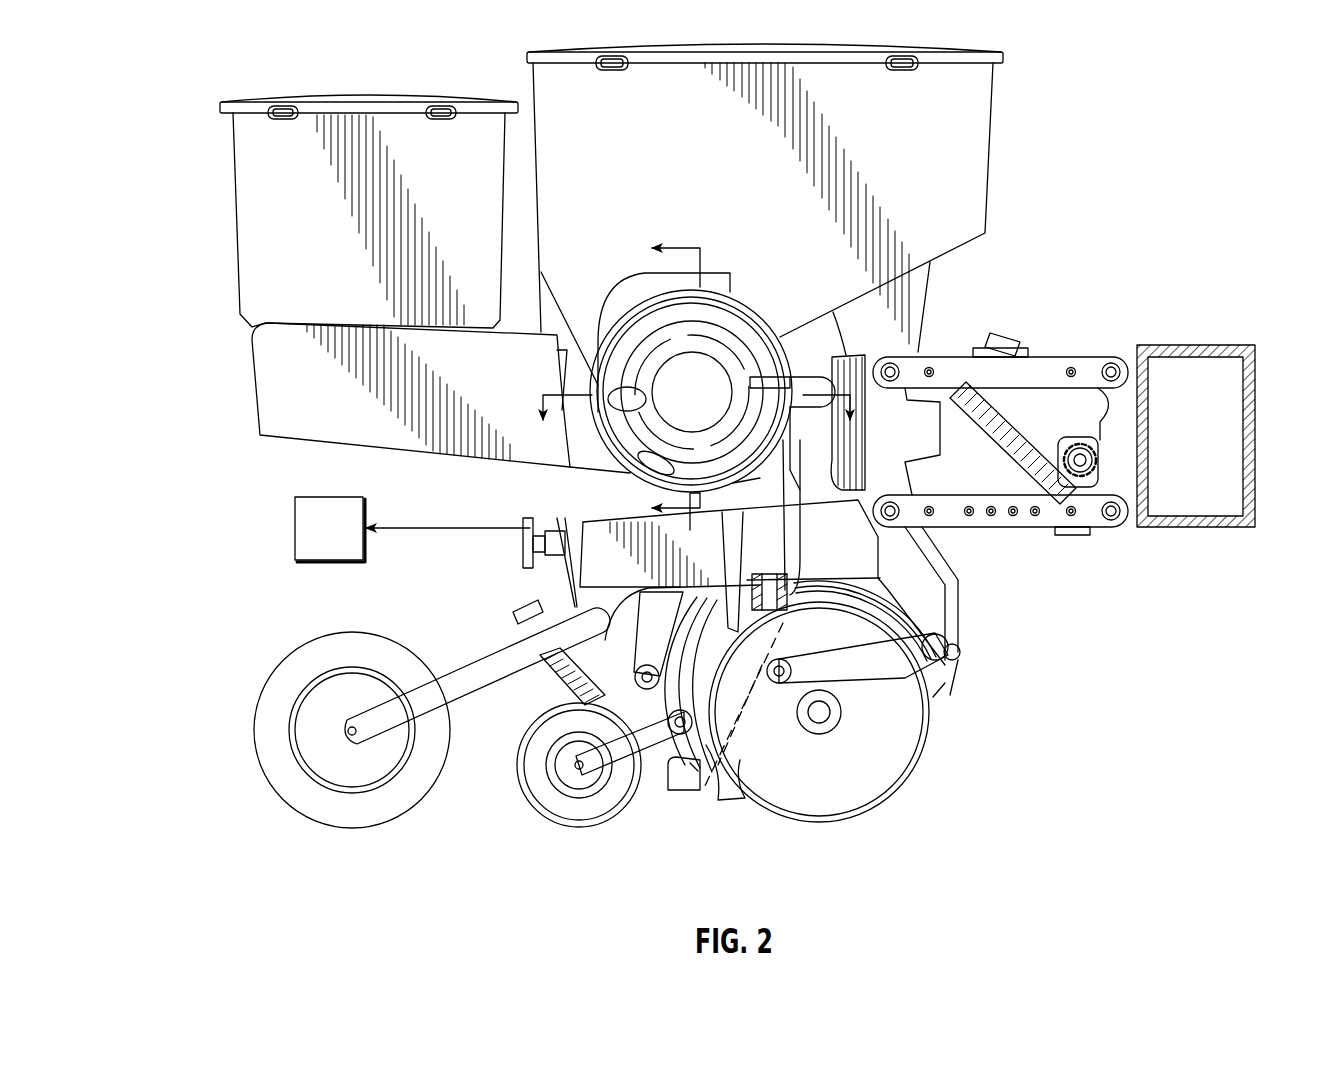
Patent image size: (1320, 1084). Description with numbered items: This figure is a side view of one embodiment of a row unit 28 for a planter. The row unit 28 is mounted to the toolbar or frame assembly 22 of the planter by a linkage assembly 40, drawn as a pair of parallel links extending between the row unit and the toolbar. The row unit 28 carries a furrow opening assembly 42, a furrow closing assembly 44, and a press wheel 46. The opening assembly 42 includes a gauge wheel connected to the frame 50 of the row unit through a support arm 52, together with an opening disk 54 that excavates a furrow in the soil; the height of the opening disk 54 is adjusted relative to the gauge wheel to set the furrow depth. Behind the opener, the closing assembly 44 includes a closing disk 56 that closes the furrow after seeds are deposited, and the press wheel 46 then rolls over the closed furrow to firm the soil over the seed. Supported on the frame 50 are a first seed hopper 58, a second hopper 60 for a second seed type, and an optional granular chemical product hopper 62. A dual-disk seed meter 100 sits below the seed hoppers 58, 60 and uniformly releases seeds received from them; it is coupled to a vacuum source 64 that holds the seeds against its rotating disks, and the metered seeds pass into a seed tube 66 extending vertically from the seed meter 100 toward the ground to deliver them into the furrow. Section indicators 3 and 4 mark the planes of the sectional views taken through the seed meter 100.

The row unit 28 is at (1108, 182).
The toolbar or frame assembly 22 is at (1197, 338).
The granular chemical product hopper 62 is at (447, 207).
The first seed hopper 58 is at (765, 214).
The second hopper 60 is at (675, 168).
The dual-disk seed meter 100 is at (768, 297).
The section line 3 is at (666, 376).
The section line 4 is at (697, 426).
The frame 50 is at (320, 428).
The vacuum source 64 is at (342, 543).
The seed tube 66 is at (770, 538).
The linkage assembly 40 is at (1053, 550).
The press wheel 46 is at (292, 668).
The furrow closing assembly 44 is at (518, 806).
The closing disk 56 is at (612, 800).
The furrow opening assembly 42 is at (962, 730).
The opening disk 54 is at (882, 760).
The support arm 52 is at (940, 608).